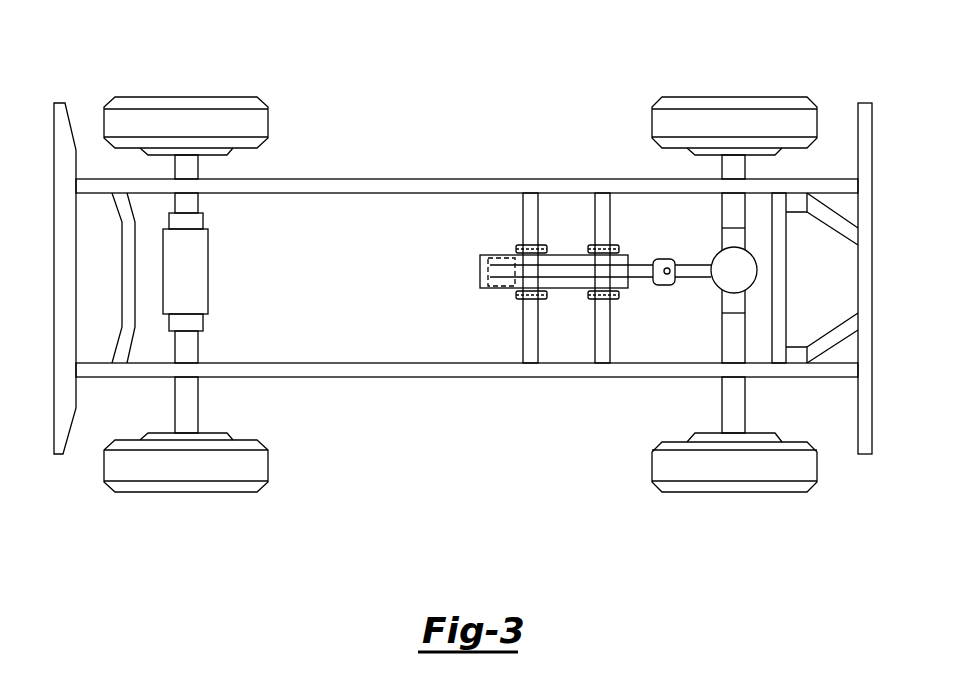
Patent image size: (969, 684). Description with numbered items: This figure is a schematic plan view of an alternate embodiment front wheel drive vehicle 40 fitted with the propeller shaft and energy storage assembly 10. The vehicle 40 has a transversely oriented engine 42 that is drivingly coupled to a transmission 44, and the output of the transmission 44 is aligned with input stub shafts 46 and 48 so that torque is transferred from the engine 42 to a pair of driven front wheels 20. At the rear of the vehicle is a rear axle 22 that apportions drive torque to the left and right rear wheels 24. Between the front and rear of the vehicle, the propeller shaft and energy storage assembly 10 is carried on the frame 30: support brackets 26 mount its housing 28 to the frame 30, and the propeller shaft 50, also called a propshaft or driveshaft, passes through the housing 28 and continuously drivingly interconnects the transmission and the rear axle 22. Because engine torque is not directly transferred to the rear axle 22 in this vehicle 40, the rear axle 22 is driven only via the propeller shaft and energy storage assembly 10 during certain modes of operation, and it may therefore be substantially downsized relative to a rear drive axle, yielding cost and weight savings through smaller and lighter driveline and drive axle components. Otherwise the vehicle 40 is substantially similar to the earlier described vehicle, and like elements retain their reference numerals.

The propeller shaft and energy storage assembly 10 is at (577, 270).
The front wheels 20 is at (143, 103).
The rear axle 22 is at (722, 348).
The rear wheels 24 is at (703, 103).
The support brackets 26 is at (533, 205).
The housing 28 is at (555, 288).
The frame 30 is at (310, 187).
The front wheel drive vehicle 40 is at (487, 158).
The engine 42 is at (205, 252).
The transmission 44 is at (199, 323).
The input stub shaft 46 is at (197, 200).
The input stub shaft 48 is at (192, 353).
The propeller shaft 50 is at (638, 277).